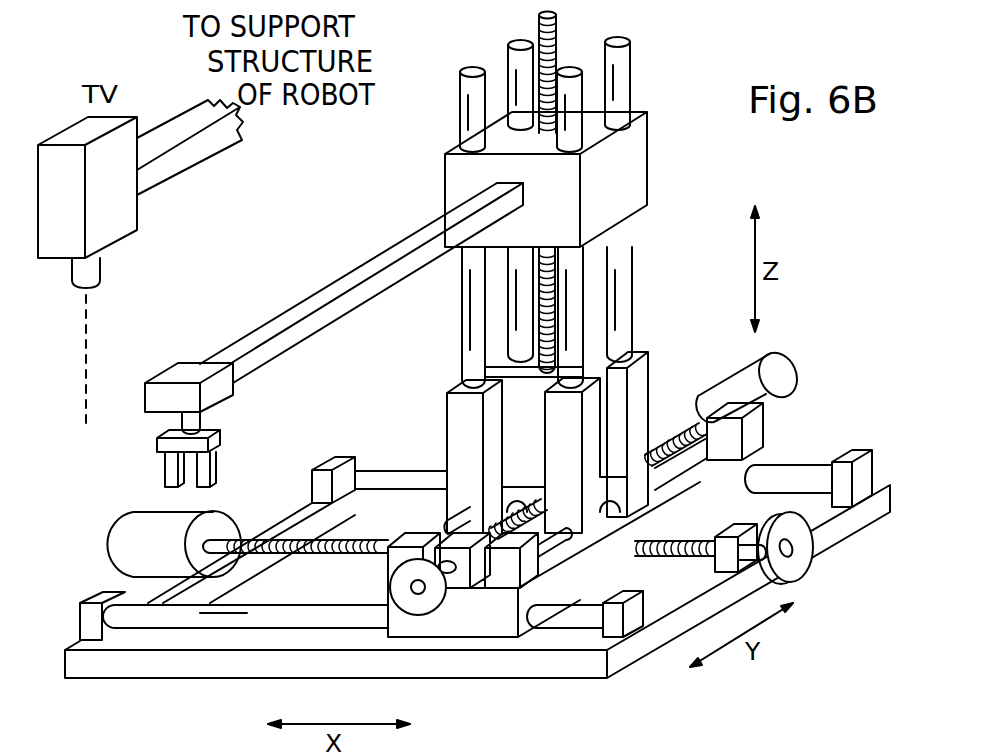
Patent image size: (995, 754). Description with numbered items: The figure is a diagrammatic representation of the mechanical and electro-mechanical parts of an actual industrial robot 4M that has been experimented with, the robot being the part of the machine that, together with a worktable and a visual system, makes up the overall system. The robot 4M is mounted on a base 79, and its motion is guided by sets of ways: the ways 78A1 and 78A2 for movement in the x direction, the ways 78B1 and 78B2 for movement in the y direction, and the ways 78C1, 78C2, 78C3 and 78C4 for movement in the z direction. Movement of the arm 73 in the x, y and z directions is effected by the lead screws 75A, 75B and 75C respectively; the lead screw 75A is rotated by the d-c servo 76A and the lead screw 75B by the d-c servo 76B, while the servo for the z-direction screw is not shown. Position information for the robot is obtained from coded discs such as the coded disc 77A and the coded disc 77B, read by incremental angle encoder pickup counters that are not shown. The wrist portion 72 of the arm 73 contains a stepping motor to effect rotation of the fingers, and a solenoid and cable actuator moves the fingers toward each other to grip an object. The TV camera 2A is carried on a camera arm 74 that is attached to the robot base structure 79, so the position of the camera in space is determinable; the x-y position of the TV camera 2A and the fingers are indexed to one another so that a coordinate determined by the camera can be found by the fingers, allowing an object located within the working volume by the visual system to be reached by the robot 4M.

The TV camera 2A is at (123, 216).
The camera arm 74 is at (206, 143).
The base 79 is at (268, 668).
The arm 73 is at (356, 277).
The wrist portion 72 is at (200, 425).
The robot 4M is at (587, 179).
The way 78C1 is at (477, 330).
The way 78C2 is at (517, 72).
The way 78C3 is at (626, 273).
The way 78C4 is at (578, 330).
The lead screw 75C is at (562, 40).
The lead screw 75B is at (676, 430).
The d-c servo 76B is at (778, 370).
The way 78B1 is at (457, 481).
The way 78B2 is at (740, 430).
The way 78A1 is at (792, 477).
The way 78A2 is at (203, 618).
The d-c servo 76A is at (116, 558).
The lead screw 75A is at (362, 557).
The coded disc 77A is at (790, 568).
The coded disc 77B is at (433, 603).